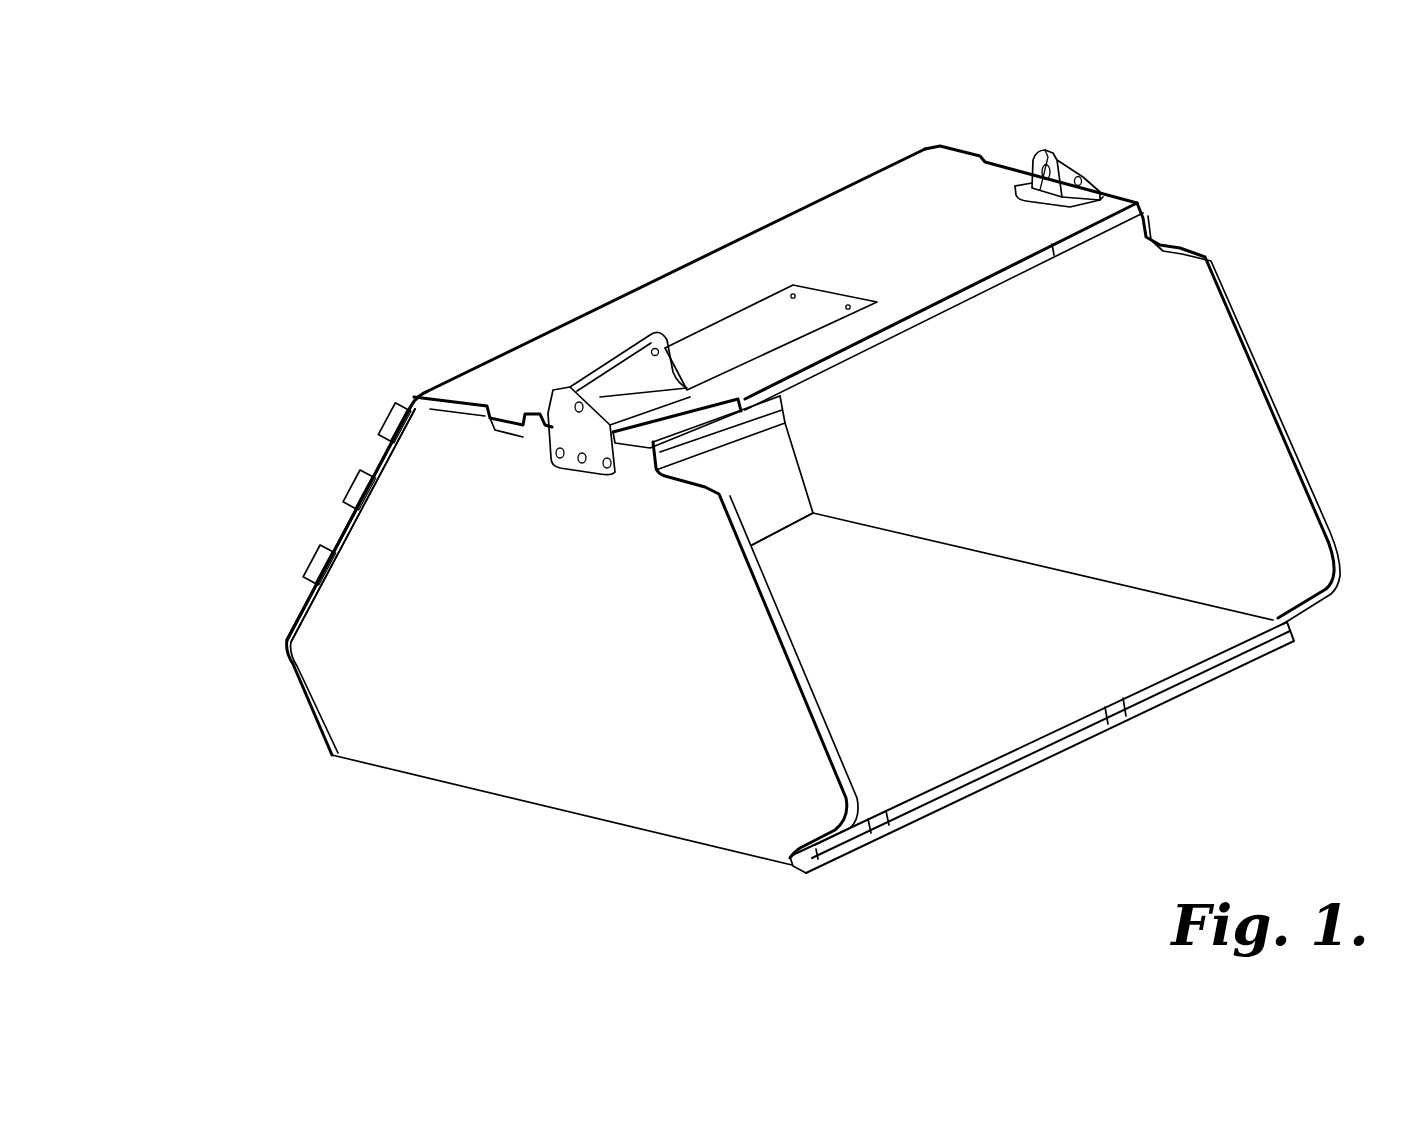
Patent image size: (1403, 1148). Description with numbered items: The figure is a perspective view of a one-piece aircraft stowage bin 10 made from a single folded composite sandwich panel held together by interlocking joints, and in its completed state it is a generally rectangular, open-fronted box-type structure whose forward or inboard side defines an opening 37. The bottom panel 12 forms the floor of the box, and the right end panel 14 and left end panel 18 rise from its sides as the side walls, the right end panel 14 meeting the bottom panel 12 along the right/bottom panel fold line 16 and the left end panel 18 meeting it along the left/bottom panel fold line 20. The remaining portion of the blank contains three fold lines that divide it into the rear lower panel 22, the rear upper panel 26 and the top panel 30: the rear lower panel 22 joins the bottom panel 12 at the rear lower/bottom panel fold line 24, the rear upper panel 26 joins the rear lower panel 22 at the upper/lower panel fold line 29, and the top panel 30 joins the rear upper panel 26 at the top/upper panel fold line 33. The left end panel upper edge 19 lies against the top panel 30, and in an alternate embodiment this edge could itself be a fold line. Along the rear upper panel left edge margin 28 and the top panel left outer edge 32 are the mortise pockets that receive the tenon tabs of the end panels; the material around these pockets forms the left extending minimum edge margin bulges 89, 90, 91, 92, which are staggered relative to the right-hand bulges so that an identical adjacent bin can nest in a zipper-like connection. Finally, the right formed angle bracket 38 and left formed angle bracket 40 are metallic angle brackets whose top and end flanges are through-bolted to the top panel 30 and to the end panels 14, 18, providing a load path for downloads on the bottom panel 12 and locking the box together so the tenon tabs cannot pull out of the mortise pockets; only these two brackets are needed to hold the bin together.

The one-piece aircraft stowage bin 10 is at (628, 238).
The bottom panel 12 is at (963, 655).
The right end panel 14 is at (1065, 428).
The right/bottom panel fold line 16 is at (1096, 572).
The left end panel 18 is at (573, 656).
The left end panel upper edge 19 is at (392, 453).
The left/bottom panel fold line 20 is at (610, 823).
The rear lower panel 22 is at (785, 503).
The rear lower/bottom panel fold line 24 is at (793, 530).
The rear upper panel 26 is at (765, 410).
The rear upper panel left edge margin 28 is at (338, 532).
The upper/lower panel fold line 29 is at (750, 437).
The top panel 30 is at (918, 256).
The top panel left outer edge 32 is at (460, 410).
The top/upper panel fold line 33 is at (782, 222).
The opening 37 is at (1152, 622).
The right formed angle bracket 38 is at (1086, 165).
The left formed angle bracket 40 is at (565, 390).
The left extending minimum edge margin bulge 89 is at (308, 572).
The left extending minimum edge margin bulge 90 is at (348, 492).
The left extending minimum edge margin bulge 91 is at (392, 422).
The left extending minimum edge margin bulge 92 is at (510, 420).